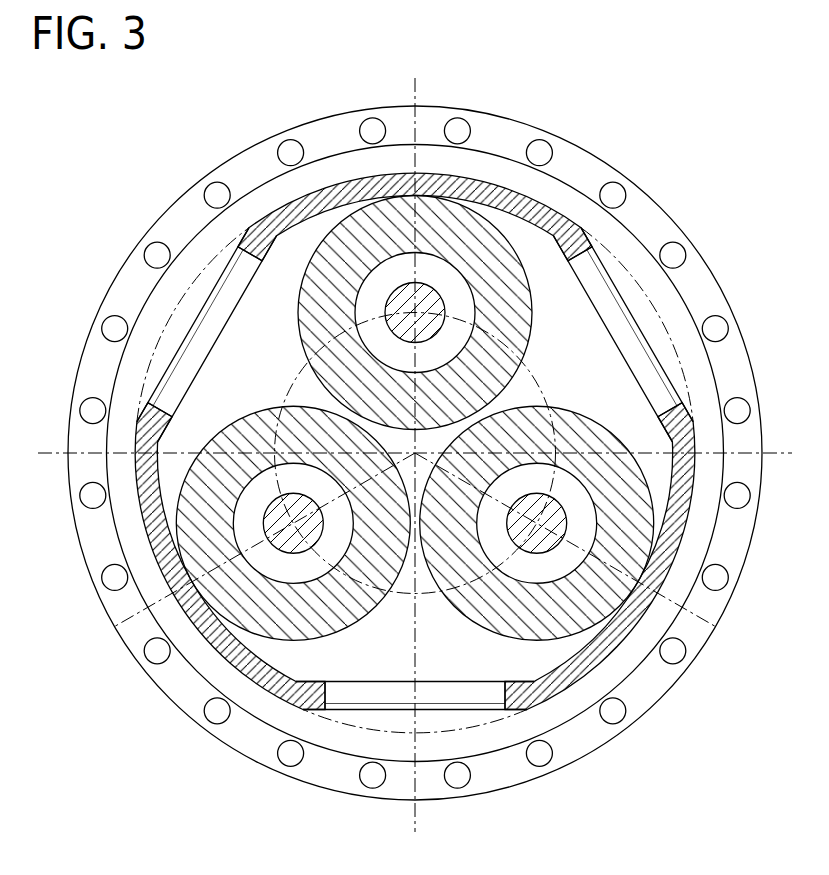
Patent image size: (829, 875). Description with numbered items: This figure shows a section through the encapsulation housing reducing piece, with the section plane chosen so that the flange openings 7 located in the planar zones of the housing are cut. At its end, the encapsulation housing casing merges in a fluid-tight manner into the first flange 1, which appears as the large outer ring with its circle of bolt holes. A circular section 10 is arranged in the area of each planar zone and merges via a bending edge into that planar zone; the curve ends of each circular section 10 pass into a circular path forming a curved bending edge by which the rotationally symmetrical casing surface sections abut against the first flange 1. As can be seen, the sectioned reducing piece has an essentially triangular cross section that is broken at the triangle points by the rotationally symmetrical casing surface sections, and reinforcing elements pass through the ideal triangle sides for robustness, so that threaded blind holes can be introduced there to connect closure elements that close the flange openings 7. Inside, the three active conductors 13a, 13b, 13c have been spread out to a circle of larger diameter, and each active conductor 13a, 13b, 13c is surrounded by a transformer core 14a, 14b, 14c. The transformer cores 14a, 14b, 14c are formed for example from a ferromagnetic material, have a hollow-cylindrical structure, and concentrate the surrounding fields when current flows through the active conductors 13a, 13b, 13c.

The first flange 1 is at (564, 146).
The flange openings 7 is at (168, 360).
The circular section 10 is at (190, 307).
The active conductor 13a is at (386, 314).
The active conductor 13b is at (567, 512).
The active conductor 13c is at (266, 514).
The transformer core 14a is at (345, 213).
The transformer core 14b is at (555, 650).
The transformer core 14c is at (275, 650).